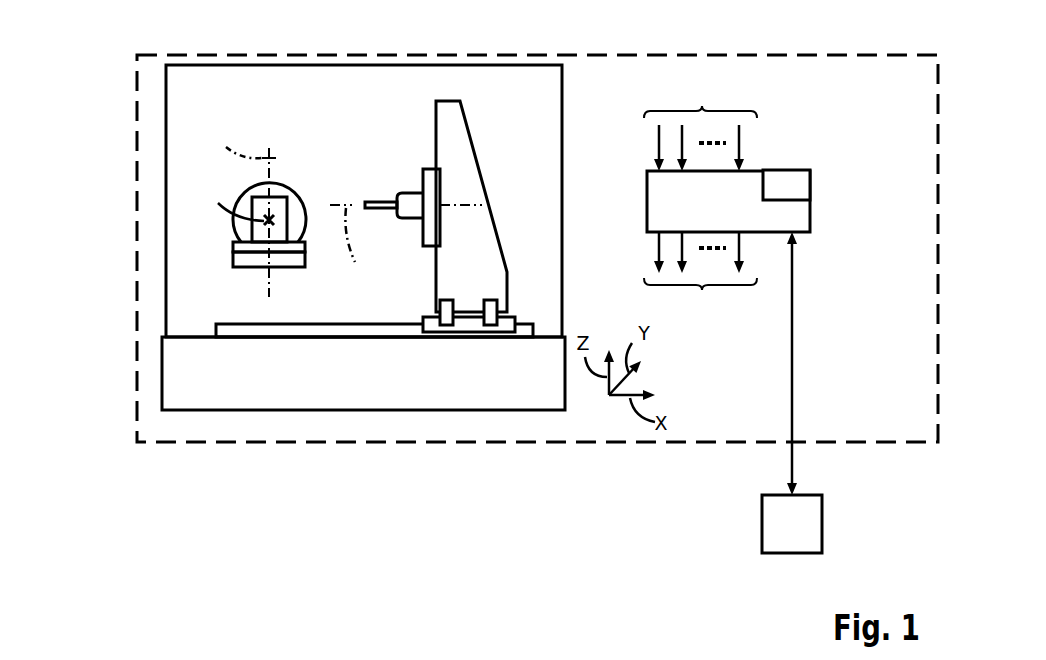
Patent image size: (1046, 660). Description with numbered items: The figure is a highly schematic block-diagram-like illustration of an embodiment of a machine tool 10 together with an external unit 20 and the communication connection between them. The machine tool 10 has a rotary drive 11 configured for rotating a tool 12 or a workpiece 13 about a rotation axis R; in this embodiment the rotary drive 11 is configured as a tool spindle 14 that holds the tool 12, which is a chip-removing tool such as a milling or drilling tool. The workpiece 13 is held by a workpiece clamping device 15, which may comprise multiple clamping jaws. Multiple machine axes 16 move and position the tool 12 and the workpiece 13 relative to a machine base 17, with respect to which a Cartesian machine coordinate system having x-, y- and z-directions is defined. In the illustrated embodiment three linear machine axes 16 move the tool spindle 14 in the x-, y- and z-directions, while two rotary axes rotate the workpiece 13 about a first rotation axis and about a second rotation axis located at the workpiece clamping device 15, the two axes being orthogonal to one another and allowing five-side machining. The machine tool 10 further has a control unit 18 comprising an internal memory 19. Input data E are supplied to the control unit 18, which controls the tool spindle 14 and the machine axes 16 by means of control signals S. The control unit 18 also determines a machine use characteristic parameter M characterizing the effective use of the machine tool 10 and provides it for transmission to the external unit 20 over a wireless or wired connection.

The machine tool 10 is at (136, 93).
The rotary drive 11 is at (388, 177).
The tool 12 is at (382, 209).
The workpiece 13 is at (273, 203).
The tool spindle 14 is at (401, 193).
The workpiece clamping device 15 is at (256, 216).
The machine axes 16 is at (364, 201).
The machine base 17 is at (284, 395).
The control unit 18 is at (753, 288).
The internal memory 19 is at (797, 182).
The external unit 20 is at (762, 523).